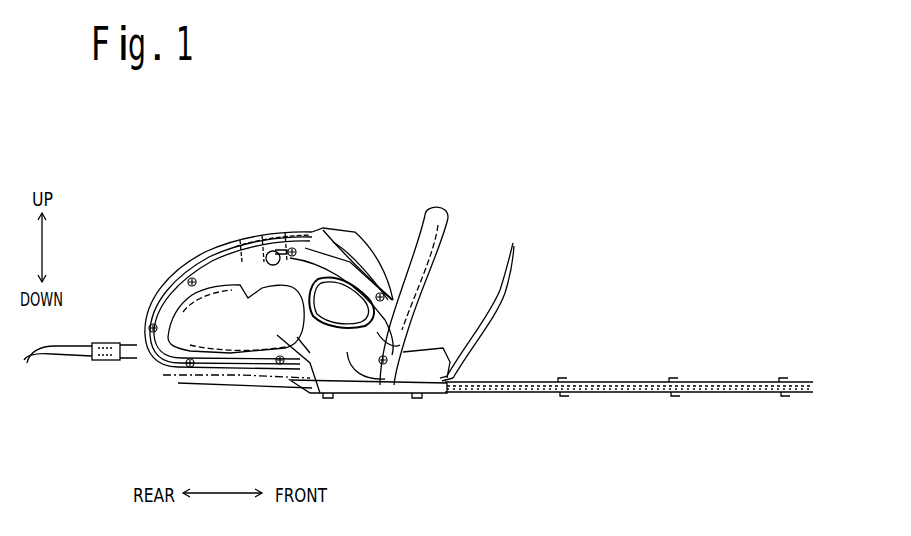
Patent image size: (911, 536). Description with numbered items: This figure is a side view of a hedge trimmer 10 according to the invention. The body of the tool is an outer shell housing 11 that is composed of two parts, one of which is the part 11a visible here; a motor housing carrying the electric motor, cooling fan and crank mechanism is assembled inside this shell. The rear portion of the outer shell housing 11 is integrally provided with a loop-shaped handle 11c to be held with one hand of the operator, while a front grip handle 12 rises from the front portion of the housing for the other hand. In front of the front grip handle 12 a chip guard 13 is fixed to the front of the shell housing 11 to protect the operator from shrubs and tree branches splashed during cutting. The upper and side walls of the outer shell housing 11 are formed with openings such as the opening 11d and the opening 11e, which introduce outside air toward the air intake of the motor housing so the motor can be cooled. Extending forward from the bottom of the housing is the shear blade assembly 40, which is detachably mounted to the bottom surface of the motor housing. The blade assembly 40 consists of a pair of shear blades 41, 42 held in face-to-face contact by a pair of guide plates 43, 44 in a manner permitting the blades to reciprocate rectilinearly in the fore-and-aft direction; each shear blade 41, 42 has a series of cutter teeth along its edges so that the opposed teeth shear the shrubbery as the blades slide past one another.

The hedge trimmer 10 is at (541, 188).
The outer shell housing 11 is at (303, 235).
The part of outer shell housing 11a is at (270, 230).
The handle 11c is at (185, 267).
The opening 11d is at (363, 243).
The opening 11e is at (310, 278).
The front grip handle 12 is at (428, 218).
The chip guard 13 is at (502, 258).
The blade assembly 40 is at (596, 341).
The shear blade 41 is at (648, 387).
The shear blade 42 is at (595, 391).
The guide plate 43 is at (700, 382).
The guide plate 44 is at (628, 394).